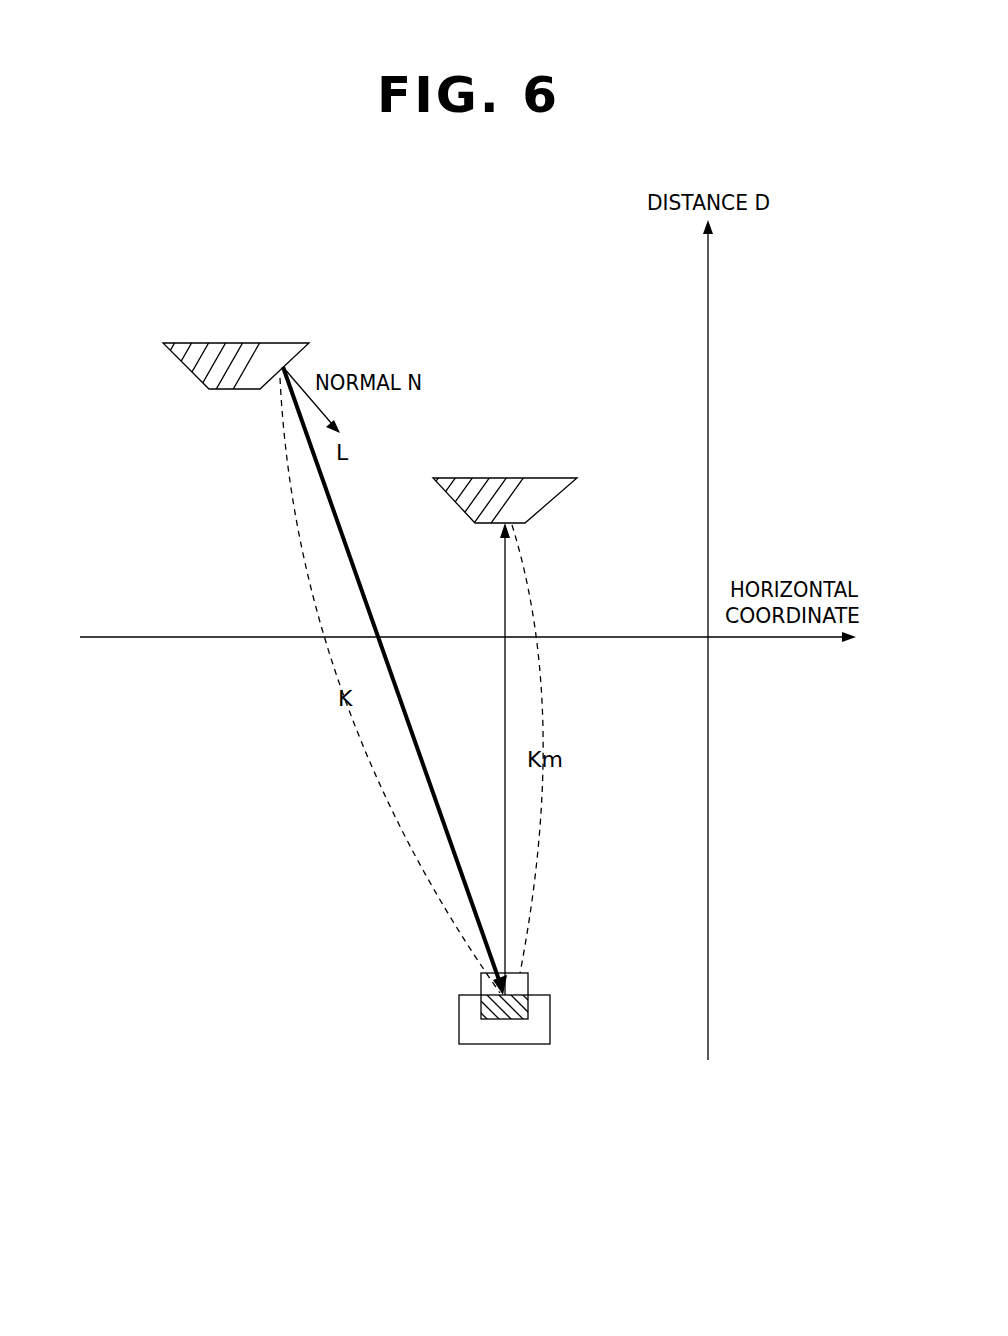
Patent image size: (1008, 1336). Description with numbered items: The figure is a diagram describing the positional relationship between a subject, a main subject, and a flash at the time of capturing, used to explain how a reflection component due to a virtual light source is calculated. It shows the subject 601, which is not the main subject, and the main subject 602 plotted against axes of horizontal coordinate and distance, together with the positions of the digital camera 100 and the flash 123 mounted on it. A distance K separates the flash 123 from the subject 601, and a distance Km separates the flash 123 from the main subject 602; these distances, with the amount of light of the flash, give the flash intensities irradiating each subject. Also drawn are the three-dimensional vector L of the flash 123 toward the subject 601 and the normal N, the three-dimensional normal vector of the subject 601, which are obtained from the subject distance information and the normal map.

The subject 601 is at (228, 390).
The main subject 602 is at (456, 506).
The digital camera 100 is at (459, 1022).
The flash 123 is at (520, 1020).